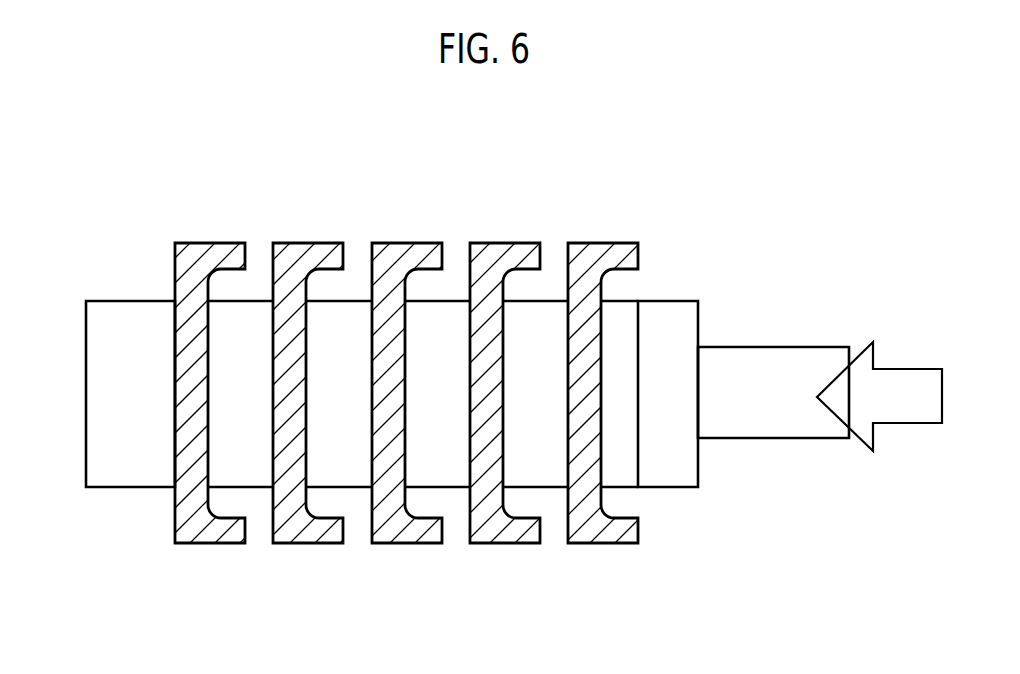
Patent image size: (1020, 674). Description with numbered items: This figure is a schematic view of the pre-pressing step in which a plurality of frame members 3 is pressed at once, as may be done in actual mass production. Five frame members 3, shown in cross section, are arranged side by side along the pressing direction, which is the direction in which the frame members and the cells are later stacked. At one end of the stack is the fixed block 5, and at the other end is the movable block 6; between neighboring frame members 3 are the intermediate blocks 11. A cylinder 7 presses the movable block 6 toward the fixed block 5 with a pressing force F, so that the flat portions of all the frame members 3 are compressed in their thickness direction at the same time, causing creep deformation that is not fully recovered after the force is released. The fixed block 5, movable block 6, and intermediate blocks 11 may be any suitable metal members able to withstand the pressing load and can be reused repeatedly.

The frame member 3 is at (600, 254).
The fixed block 5 is at (112, 310).
The movable block 6 is at (661, 312).
The cylinder 7 is at (789, 360).
The intermediate blocks 11 is at (250, 472).